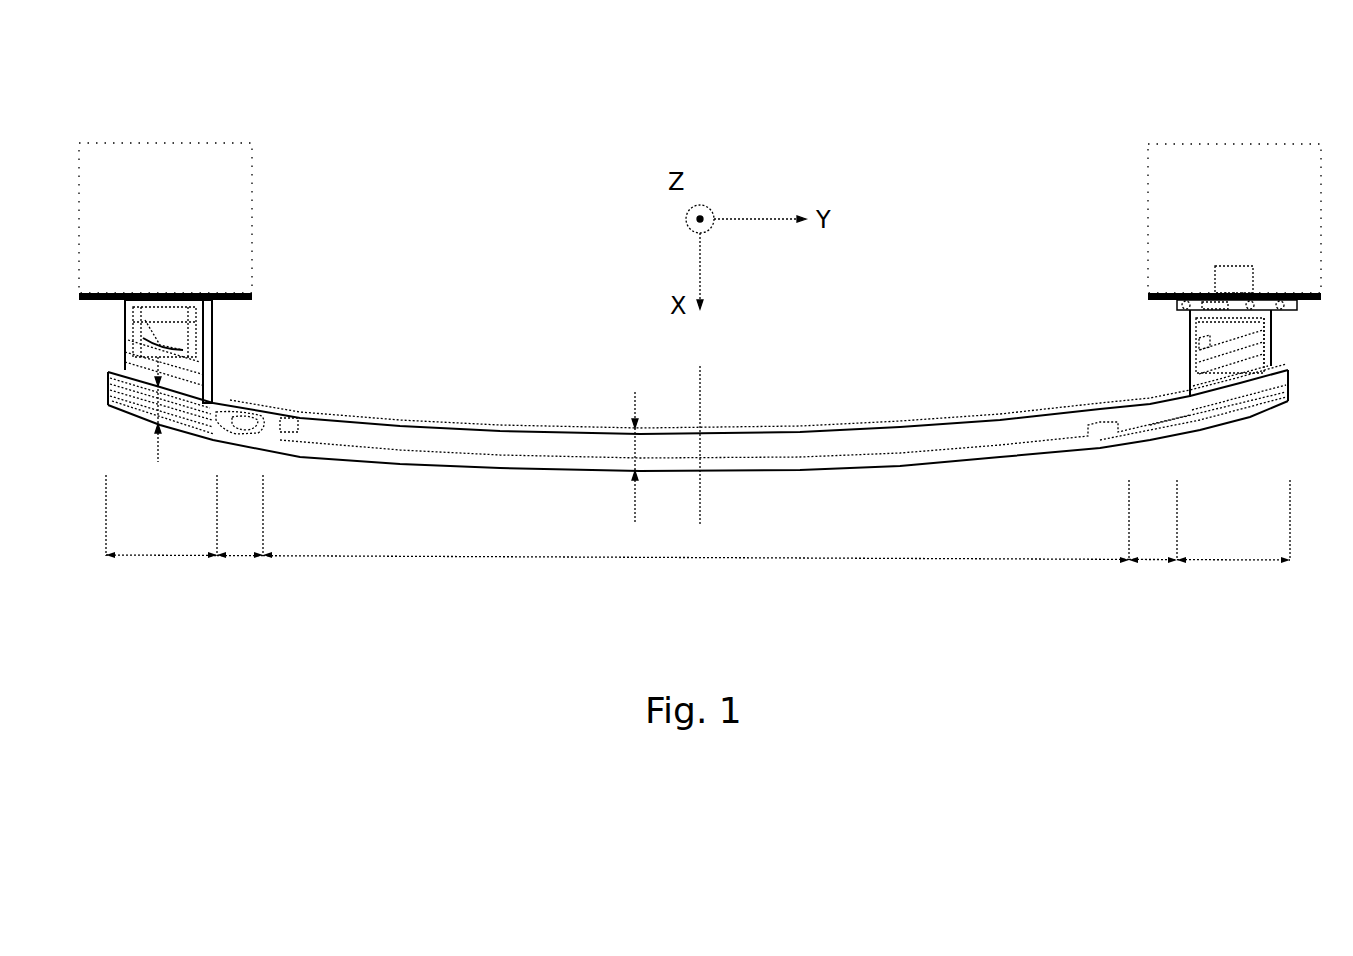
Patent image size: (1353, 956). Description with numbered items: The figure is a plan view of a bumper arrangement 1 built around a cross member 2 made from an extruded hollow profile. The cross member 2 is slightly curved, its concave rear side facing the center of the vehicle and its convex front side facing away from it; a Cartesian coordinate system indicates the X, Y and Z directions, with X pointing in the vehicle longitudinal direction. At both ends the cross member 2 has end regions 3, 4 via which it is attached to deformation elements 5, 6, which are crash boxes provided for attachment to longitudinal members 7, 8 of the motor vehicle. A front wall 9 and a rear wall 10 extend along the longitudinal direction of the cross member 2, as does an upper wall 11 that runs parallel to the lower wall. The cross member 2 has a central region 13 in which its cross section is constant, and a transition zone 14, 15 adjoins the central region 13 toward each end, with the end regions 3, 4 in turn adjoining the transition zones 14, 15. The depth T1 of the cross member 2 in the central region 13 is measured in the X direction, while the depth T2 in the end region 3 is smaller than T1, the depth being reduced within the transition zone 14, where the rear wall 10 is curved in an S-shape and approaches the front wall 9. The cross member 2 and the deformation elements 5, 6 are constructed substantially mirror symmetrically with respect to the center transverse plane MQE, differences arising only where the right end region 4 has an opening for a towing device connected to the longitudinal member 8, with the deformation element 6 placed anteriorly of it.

The bumper arrangement 1 is at (970, 108).
The cross member 2 is at (1021, 410).
The end region 3 is at (161, 573).
The end region 4 is at (1237, 563).
The deformation element 5 is at (204, 343).
The deformation element 6 is at (1188, 350).
The longitudinal member 7 is at (254, 184).
The longitudinal member 8 is at (1148, 180).
The front wall 9 is at (878, 468).
The rear wall 10 is at (851, 426).
The upper wall 11 is at (950, 442).
The central region 13 is at (675, 560).
The transition zone 14 is at (240, 558).
The transition zone 15 is at (1145, 563).
The depth T1 is at (617, 450).
The depth T2 is at (156, 452).
The center transverse plane MQE is at (698, 383).